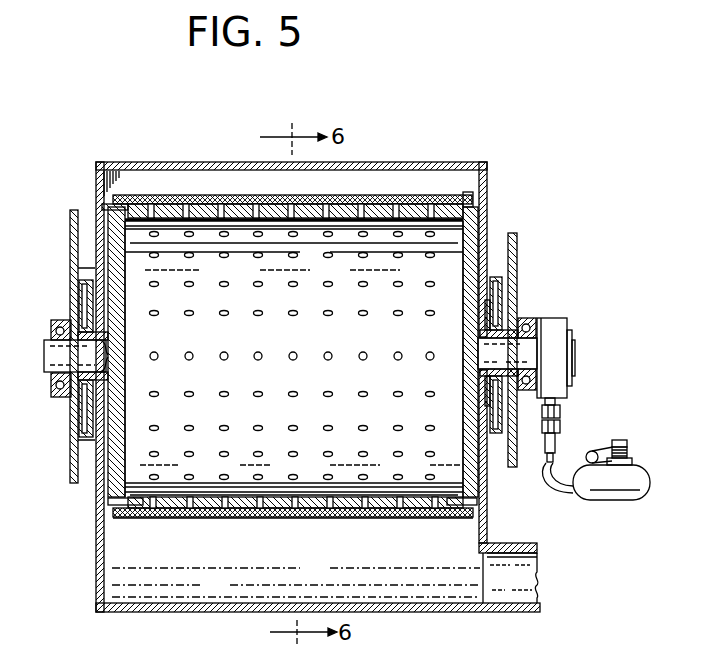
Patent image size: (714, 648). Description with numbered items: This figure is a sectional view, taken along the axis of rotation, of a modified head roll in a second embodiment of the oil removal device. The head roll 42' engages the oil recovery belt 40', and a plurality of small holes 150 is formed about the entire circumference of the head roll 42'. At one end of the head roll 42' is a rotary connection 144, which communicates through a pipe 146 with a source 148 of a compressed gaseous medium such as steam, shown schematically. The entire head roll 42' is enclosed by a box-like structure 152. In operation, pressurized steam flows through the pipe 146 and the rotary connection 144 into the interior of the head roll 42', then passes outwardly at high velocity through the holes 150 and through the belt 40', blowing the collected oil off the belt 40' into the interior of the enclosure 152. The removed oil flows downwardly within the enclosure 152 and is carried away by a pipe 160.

The small holes 150 is at (221, 203).
The box-like structure 152 is at (388, 163).
The oil recovery belt 40' is at (297, 316).
The head roll 42' is at (334, 344).
The rotary connection 144 is at (553, 333).
The pipe 146 is at (563, 443).
The source of compressed gaseous medium 148 is at (613, 500).
The pipe 160 is at (528, 585).